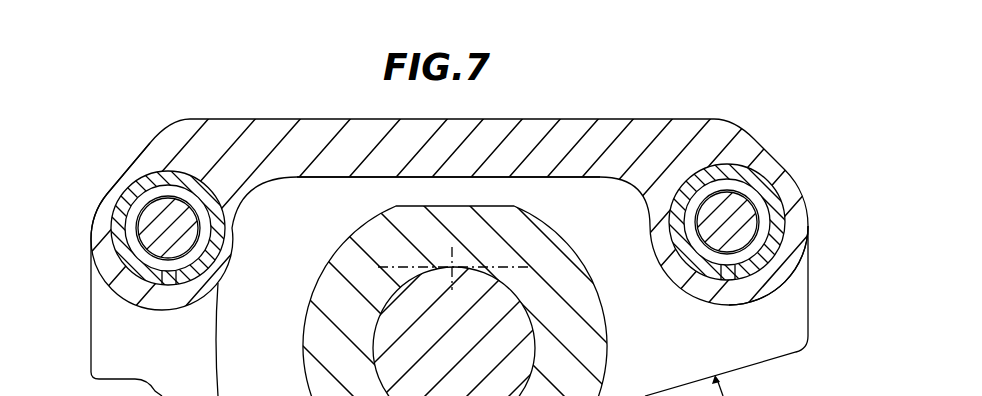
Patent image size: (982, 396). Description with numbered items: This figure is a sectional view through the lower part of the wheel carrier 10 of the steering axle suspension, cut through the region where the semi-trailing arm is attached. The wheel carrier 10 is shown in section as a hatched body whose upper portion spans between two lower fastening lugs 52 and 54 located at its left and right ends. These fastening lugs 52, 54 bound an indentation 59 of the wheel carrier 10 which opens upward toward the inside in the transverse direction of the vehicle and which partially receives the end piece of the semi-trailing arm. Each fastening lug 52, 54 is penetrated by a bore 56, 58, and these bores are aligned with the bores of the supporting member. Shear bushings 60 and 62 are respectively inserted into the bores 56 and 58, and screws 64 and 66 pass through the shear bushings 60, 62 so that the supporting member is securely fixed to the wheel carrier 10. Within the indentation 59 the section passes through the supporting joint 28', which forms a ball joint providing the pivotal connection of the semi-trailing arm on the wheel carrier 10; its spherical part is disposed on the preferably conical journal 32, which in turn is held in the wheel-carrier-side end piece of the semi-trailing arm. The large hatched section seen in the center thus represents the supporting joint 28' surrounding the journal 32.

The wheel carrier 10 is at (650, 116).
The supporting joint 28' is at (433, 298).
The journal 32 is at (400, 338).
The lower fastening lug 52 is at (795, 240).
The lower fastening lug 54 is at (140, 161).
The bore 56 is at (763, 258).
The bore 58 is at (123, 255).
The indentation 59 is at (572, 190).
The shear bushing 60 is at (767, 183).
The shear bushing 62 is at (120, 215).
The screw 64 is at (747, 224).
The screw 66 is at (157, 221).